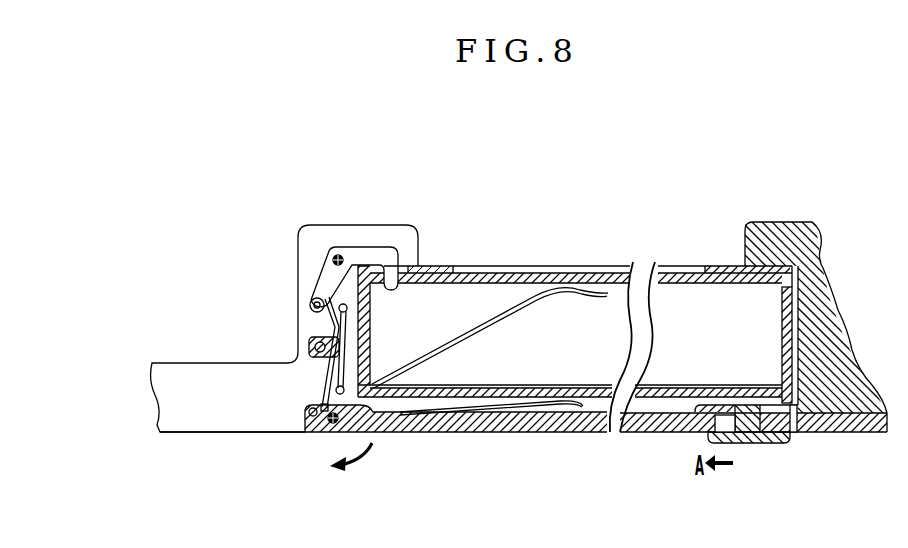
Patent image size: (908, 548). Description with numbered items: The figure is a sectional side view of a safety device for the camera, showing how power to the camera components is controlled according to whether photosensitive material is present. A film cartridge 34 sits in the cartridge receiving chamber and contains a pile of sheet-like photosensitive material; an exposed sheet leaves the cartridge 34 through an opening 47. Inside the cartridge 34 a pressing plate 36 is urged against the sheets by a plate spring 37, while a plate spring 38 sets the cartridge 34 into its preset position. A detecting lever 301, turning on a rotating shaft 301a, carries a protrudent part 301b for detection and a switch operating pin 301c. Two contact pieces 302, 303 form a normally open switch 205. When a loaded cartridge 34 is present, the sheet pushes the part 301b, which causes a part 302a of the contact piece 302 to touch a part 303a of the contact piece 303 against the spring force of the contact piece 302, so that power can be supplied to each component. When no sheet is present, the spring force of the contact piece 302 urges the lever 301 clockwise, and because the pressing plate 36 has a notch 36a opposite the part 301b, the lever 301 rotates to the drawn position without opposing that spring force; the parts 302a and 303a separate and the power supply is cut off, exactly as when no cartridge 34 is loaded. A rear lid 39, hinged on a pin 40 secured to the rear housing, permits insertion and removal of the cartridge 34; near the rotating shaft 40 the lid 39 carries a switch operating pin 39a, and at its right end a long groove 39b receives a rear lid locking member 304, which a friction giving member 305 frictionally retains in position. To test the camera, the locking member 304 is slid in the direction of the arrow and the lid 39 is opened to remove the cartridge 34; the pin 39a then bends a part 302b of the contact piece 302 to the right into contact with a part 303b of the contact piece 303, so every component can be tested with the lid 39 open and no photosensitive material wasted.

The lever 301 is at (377, 255).
The rotating shaft 301a is at (340, 252).
The protrudent part 301b is at (391, 292).
The switch operating pin 301c is at (311, 300).
The contact piece 302 is at (329, 368).
The part of contact piece 302a is at (333, 335).
The part of contact piece 302b is at (322, 410).
The switch 205 is at (310, 345).
The contact piece 303 is at (339, 378).
The part of contact piece 303a is at (347, 310).
The part of contact piece 303b is at (345, 387).
The pressing plate 36 is at (480, 285).
The notch 36a is at (425, 267).
The film cartridge 34 is at (400, 398).
The plate spring 37 is at (522, 316).
The plate spring 38 is at (530, 403).
The rear lid 39 is at (485, 420).
The switch operating pin 39a is at (313, 418).
The long groove 39b is at (708, 433).
The pin 40 is at (333, 425).
The opening 47 is at (800, 280).
The rear lid locking member 304 is at (753, 444).
The friction giving member 305 is at (790, 435).